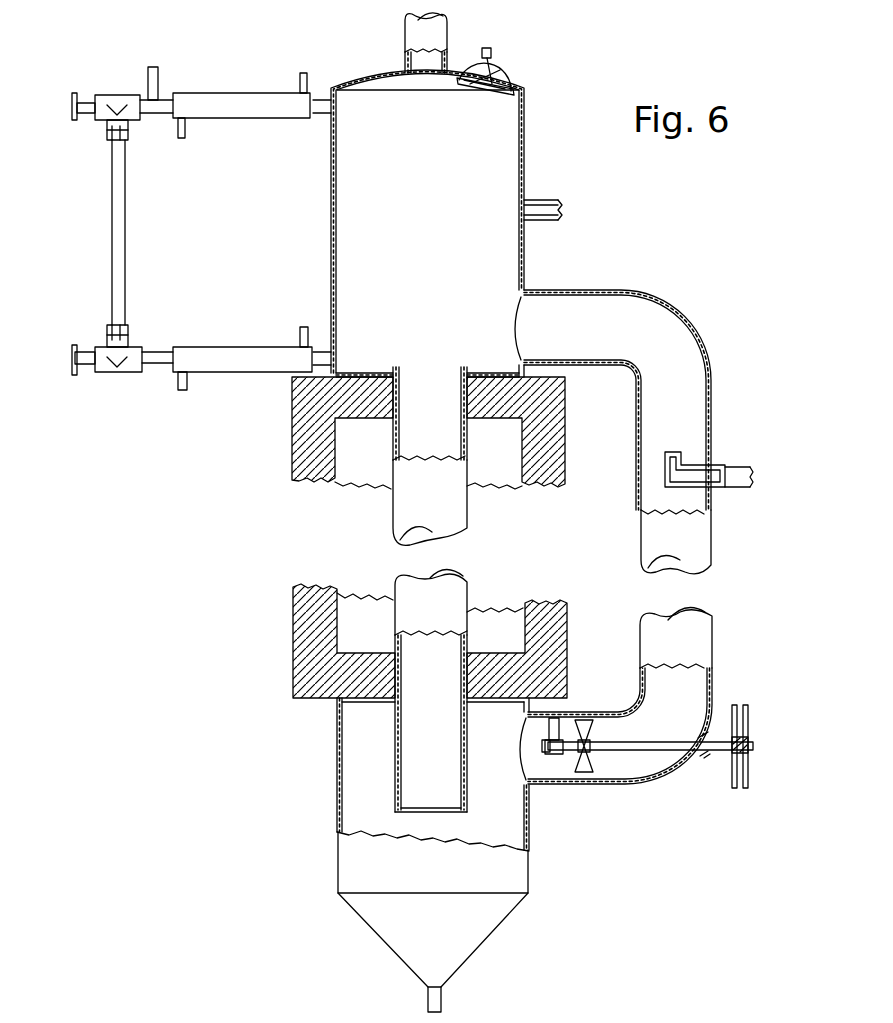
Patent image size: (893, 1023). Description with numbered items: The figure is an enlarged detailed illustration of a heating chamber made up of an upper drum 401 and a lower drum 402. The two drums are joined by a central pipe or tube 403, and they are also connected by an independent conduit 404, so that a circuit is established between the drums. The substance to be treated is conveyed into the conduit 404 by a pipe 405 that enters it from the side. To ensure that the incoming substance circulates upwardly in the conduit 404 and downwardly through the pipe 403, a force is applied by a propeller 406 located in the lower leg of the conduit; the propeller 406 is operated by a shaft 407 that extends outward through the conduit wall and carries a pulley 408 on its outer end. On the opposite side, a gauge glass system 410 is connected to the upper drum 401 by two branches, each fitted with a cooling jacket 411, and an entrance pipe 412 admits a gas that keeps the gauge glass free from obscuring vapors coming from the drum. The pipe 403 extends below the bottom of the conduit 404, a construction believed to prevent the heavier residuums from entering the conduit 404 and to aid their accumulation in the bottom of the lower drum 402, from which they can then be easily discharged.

The upper drum 401 is at (502, 178).
The lower drum 402 is at (352, 858).
The pipe 403 is at (452, 507).
The conduit 404 is at (667, 335).
The pipe 405 is at (725, 473).
The propeller 406 is at (583, 767).
The shaft 407 is at (637, 747).
The pulley 408 is at (747, 715).
The gauge glass system 410 is at (118, 245).
The cooling jackets 411 is at (227, 100).
The entrance pipe 412 is at (157, 70).